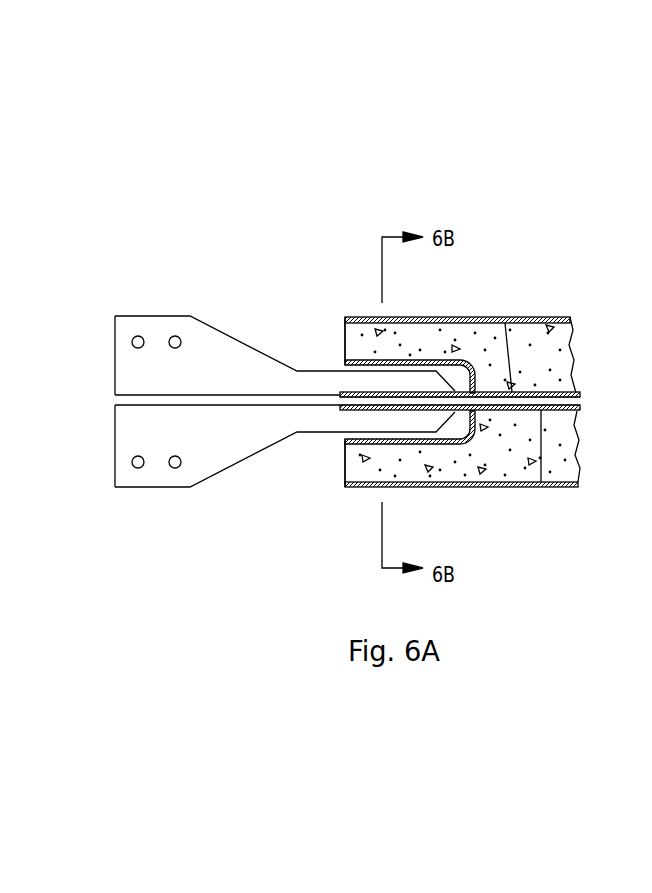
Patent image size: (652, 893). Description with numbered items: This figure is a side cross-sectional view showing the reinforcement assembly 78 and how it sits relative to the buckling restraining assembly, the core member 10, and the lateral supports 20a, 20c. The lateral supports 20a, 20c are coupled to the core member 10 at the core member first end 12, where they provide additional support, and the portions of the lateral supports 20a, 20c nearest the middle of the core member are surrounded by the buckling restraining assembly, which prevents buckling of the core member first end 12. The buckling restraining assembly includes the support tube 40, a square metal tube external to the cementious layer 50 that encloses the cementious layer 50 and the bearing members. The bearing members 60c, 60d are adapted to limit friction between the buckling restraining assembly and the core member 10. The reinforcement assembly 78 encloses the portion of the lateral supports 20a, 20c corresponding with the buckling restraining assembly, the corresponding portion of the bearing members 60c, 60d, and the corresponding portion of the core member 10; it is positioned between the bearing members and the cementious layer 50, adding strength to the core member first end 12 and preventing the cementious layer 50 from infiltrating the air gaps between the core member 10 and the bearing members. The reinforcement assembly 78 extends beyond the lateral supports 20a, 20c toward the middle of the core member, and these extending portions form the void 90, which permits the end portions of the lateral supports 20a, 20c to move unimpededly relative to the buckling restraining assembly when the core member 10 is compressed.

The core member first end 12 is at (256, 354).
The lateral support 20a is at (127, 360).
The lateral support 20c is at (128, 438).
The core member 10 is at (133, 395).
The support tube 40 is at (460, 318).
The cementious layer 50 is at (547, 355).
The bearing member 60c is at (505, 323).
The bearing member 60d is at (541, 487).
The reinforcement assembly 78 is at (372, 362).
The void 90 is at (455, 375).